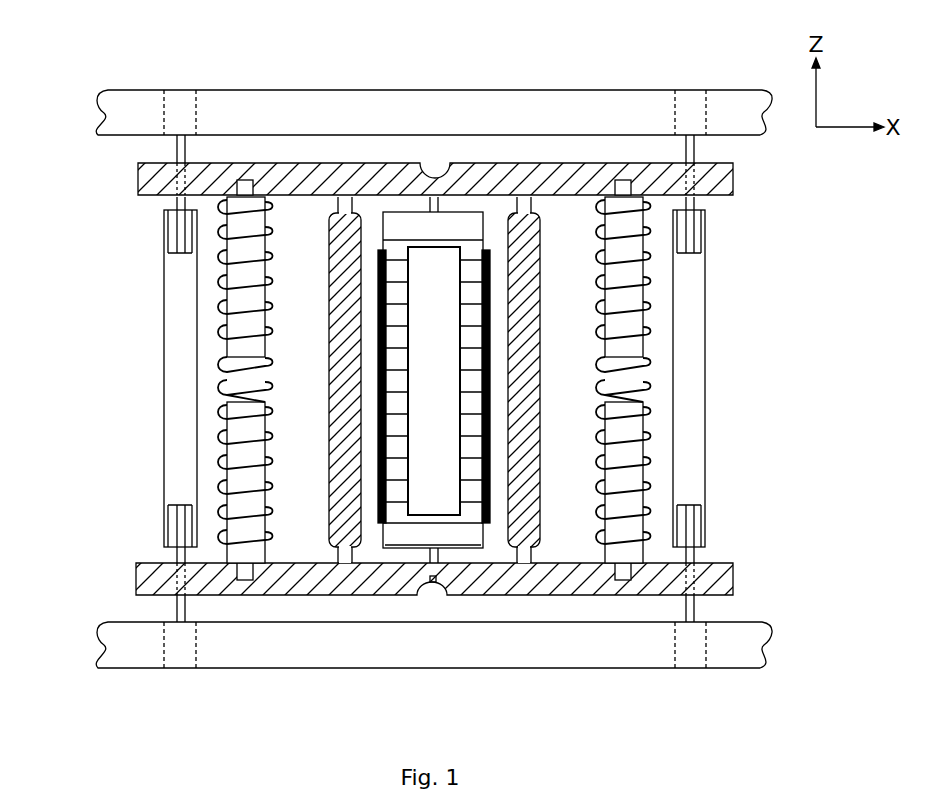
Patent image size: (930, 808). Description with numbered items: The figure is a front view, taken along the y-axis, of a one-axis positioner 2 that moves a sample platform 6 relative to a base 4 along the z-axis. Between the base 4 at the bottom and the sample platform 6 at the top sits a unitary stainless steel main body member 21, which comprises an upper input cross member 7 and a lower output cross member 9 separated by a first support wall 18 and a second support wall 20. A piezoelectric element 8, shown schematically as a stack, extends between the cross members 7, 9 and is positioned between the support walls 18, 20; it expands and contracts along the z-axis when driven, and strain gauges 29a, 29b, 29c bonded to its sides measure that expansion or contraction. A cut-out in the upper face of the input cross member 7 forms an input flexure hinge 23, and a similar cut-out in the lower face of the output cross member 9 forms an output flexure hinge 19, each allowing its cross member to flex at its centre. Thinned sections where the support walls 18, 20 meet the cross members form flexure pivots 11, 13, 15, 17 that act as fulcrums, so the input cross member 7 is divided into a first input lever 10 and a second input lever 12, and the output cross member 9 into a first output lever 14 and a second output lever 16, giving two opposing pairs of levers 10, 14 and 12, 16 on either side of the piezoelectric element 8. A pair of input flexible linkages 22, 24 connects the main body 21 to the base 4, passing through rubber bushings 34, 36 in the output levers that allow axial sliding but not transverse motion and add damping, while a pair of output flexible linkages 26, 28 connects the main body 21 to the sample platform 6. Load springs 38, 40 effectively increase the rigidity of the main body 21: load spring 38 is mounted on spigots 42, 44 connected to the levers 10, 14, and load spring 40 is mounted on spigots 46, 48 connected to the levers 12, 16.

The positioner 2 is at (428, 379).
The base 4 is at (763, 623).
The sample platform 6 is at (724, 90).
The input cross member 7 is at (465, 121).
The piezoelectric element 8 is at (421, 378).
The output cross member 9 is at (426, 629).
The first input lever 10 is at (290, 172).
The flexure pivot 11 is at (338, 197).
The second input lever 12 is at (578, 172).
The flexure pivot 13 is at (527, 200).
The first output lever 14 is at (276, 590).
The flexure pivot 15 is at (345, 565).
The second output lever 16 is at (560, 580).
The flexure pivot 17 is at (520, 560).
The first support wall 18 is at (312, 379).
The output flexure hinge 19 is at (432, 582).
The second support wall 20 is at (549, 379).
The main body member 21 is at (140, 575).
The input flexible linkage 22 is at (130, 383).
The input flexure hinge 23 is at (431, 250).
The input flexible linkage 24 is at (722, 381).
The output flexible linkage 26 is at (170, 240).
The output flexible linkage 28 is at (707, 234).
The strain gauge 29a is at (392, 205).
The strain gauge 29b is at (367, 514).
The strain gauge 29c is at (502, 262).
The rubber bushing 34 is at (170, 570).
The rubber bushing 36 is at (718, 565).
The load spring 38 is at (269, 380).
The load spring 40 is at (598, 380).
The mounting spigot 42 is at (264, 330).
The mounting spigot 44 is at (264, 466).
The mounting spigot 46 is at (614, 252).
The mounting spigot 48 is at (612, 512).